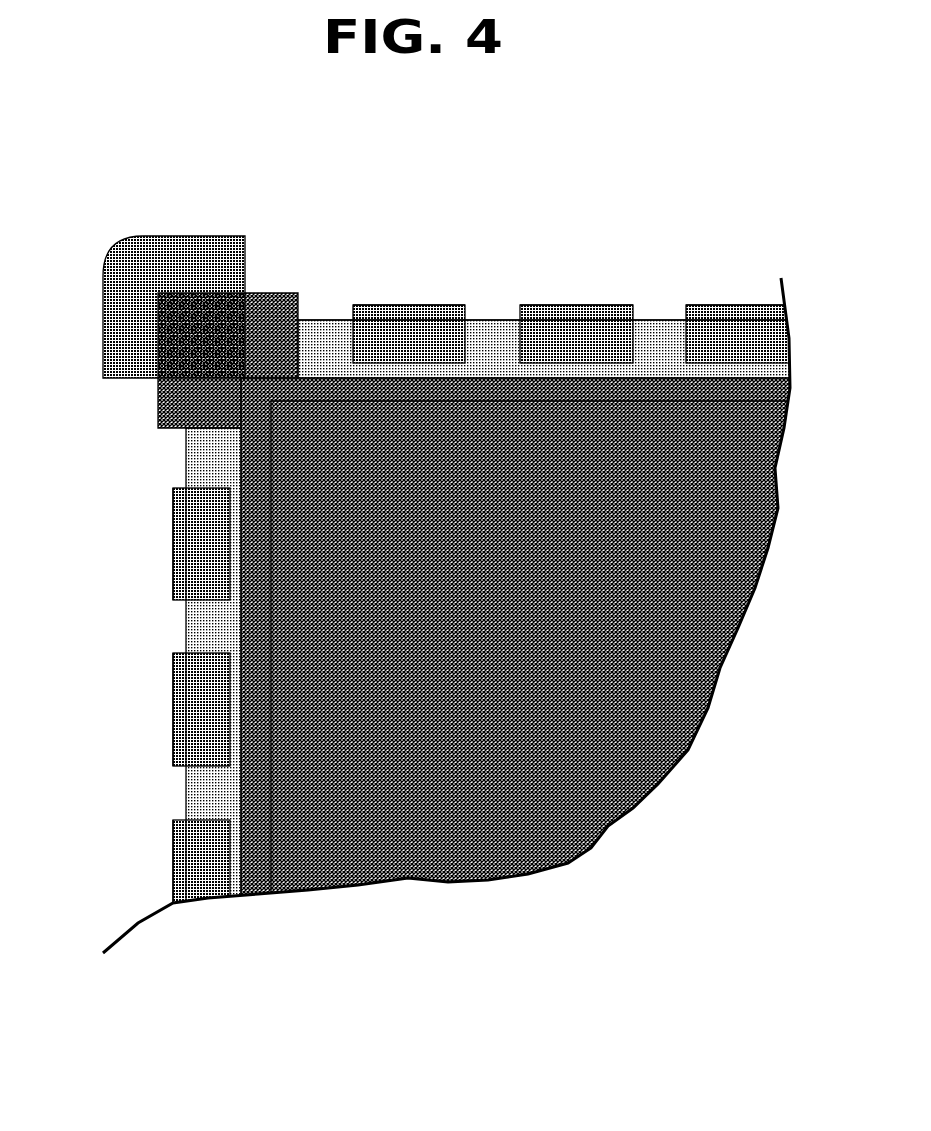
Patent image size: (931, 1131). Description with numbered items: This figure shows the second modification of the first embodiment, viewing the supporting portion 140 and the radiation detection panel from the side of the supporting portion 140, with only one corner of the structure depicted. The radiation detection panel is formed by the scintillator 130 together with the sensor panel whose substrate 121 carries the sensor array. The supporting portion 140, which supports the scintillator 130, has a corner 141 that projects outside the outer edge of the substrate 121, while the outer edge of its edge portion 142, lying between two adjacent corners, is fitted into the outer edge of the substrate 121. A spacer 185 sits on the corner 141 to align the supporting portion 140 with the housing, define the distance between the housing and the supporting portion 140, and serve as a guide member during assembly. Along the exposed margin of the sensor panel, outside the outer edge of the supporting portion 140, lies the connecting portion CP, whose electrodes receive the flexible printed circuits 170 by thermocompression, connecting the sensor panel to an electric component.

The substrate 121 is at (487, 340).
The scintillator 130 is at (648, 387).
The supporting portion 140 is at (325, 355).
The corner 141 is at (252, 286).
The edge portion 142 is at (692, 365).
The flexible printed circuit 170 is at (410, 298).
The spacer 185 is at (152, 232).
The connecting portion CP is at (365, 298).